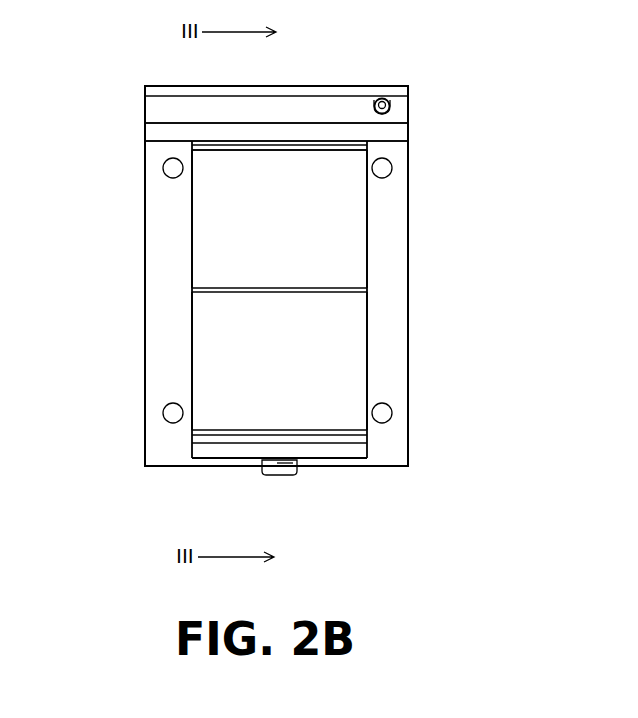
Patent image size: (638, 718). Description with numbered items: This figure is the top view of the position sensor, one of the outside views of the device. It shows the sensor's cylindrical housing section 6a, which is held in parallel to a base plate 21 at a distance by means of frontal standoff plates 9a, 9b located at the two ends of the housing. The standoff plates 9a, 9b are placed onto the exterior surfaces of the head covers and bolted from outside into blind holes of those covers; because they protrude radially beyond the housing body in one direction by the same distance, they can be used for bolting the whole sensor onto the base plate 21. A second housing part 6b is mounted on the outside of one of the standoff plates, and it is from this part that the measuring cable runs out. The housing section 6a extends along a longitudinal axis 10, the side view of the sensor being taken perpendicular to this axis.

The cylindrical housing section 6a is at (320, 370).
The second housing part 6b is at (400, 112).
The standoff plate 9a is at (217, 448).
The standoff plate 9b is at (398, 128).
The longitudinal axis 10 is at (277, 243).
The base plate 21 is at (397, 288).